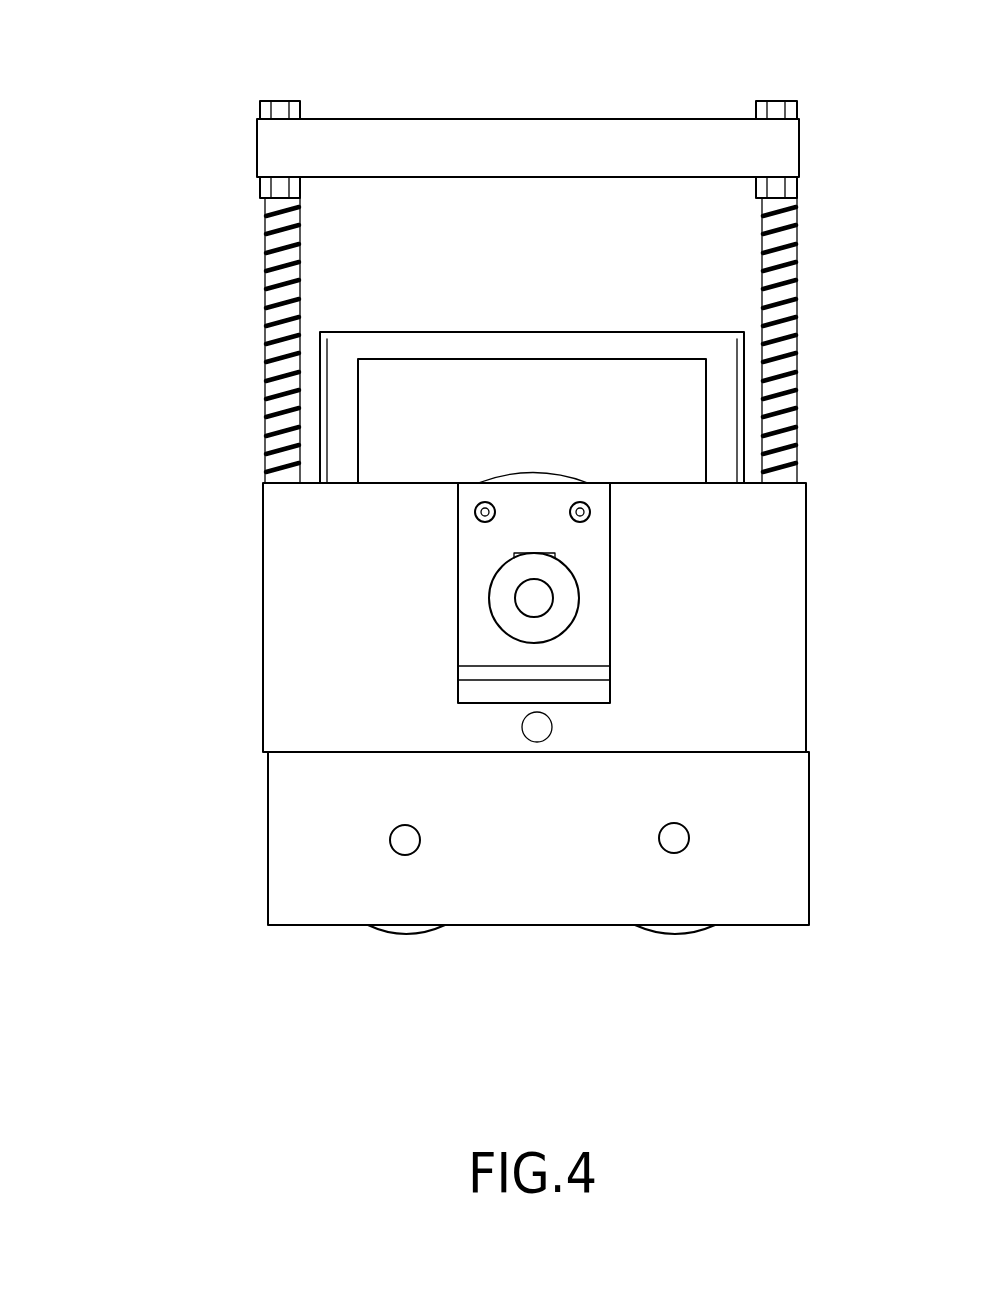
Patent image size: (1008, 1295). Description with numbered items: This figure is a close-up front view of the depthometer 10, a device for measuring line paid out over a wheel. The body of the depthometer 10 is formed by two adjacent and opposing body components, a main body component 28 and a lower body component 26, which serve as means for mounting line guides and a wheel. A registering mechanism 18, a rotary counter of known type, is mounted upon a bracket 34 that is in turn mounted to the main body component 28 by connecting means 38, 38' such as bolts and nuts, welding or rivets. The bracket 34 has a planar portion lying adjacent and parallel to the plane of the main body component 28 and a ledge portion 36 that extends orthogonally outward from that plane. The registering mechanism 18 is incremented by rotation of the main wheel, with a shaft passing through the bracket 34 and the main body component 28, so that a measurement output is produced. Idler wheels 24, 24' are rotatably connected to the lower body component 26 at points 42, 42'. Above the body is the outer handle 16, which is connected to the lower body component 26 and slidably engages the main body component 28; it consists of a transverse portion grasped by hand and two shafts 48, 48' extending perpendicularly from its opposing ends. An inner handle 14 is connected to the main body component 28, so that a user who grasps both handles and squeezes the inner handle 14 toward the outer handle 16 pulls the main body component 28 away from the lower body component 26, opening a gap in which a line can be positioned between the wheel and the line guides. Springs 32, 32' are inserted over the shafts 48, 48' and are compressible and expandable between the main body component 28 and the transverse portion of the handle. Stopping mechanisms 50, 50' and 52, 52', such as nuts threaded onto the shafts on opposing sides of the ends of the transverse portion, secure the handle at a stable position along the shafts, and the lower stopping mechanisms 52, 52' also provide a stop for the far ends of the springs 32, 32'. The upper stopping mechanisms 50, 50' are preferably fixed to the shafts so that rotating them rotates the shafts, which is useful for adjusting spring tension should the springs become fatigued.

The depthometer 10 is at (105, 210).
The inner handle 14 is at (605, 350).
The outer handle 16 is at (453, 140).
The registering mechanism 18 is at (573, 597).
The idler wheel 24 is at (406, 969).
The idler wheel 24' is at (675, 971).
The lower body component 26 is at (809, 790).
The main body component 28 is at (807, 615).
The spring 32 is at (250, 340).
The spring 32' is at (815, 340).
The bracket 34 is at (465, 546).
The ledge portion 36 is at (598, 665).
The connecting means 38 is at (491, 474).
The connecting means 38' is at (593, 472).
The point 42 is at (419, 805).
The point 42' is at (697, 808).
The shaft 48 is at (246, 456).
The shaft 48' is at (809, 394).
The stopping mechanism 50 is at (282, 70).
The stopping mechanism 50' is at (783, 66).
The stopping mechanism 52 is at (247, 187).
The stopping mechanism 52' is at (824, 172).